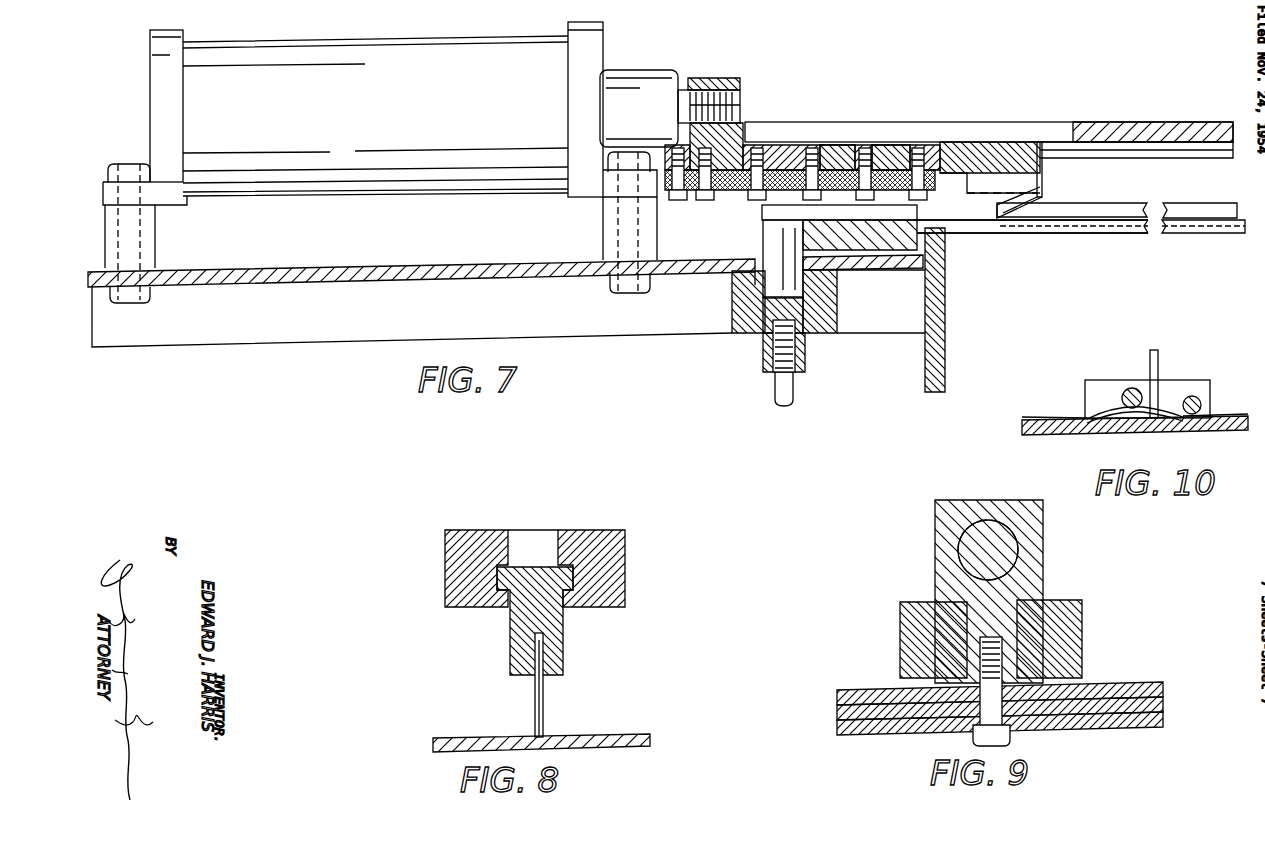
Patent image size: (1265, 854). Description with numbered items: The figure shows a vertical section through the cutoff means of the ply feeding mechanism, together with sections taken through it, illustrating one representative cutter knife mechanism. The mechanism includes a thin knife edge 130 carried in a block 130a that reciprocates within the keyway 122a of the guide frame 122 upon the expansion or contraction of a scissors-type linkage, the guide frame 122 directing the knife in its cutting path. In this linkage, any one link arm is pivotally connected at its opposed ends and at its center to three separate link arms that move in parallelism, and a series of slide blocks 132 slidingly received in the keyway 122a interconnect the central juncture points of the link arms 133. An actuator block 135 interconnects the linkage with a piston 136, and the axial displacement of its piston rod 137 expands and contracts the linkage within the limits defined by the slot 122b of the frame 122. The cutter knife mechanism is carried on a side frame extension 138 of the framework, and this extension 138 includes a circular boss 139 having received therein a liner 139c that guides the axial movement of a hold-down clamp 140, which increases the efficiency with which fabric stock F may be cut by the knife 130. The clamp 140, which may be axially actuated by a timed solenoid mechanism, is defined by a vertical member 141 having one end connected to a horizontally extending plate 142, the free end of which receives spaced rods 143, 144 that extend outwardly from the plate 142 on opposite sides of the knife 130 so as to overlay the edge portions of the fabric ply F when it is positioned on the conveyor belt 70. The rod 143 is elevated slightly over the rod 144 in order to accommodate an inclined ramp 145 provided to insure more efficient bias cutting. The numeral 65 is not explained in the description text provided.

In FIG. 7, the piston 136 is at (512, 48).
In FIG. 7, the piston rod 137 is at (745, 98).
In FIG. 9, the piston rod 137 is at (1000, 547).
In FIG. 7, the frame 65 is at (758, 104).
In FIG. 7, the actuator block 135 is at (745, 125).
In FIG. 9, the actuator block 135 is at (1044, 573).
In FIG. 7, the link arms 133 is at (775, 143).
In FIG. 9, the link arms 133 is at (838, 712).
In FIG. 7, the slide blocks 132 is at (828, 145).
In FIG. 7, the slot 122b is at (1063, 128).
In FIG. 8, the slot 122b is at (518, 530).
In FIG. 8, the keyway 122a is at (575, 578).
In FIG. 9, the guide frame 122 is at (918, 602).
In FIG. 7, the knife edge 130 is at (1018, 148).
In FIG. 10, the knife edge 130 is at (1158, 360).
In FIG. 8, the knife edge 130 is at (546, 705).
In FIG. 7, the block 130a is at (1042, 167).
In FIG. 8, the block 130a is at (553, 630).
In FIG. 7, the side frame extension 138 is at (512, 276).
In FIG. 7, the circular boss 139 is at (738, 310).
In FIG. 7, the liner 139c is at (806, 318).
In FIG. 7, the hold-down clamp 140 is at (770, 246).
In FIG. 7, the vertical member 141 is at (804, 352).
In FIG. 7, the horizontally extending plate 142 is at (823, 230).
In FIG. 10, the horizontally extending plate 142 is at (1208, 395).
In FIG. 7, the rod 143 is at (1228, 196).
In FIG. 10, the rod 143 is at (1130, 389).
In FIG. 10, the rod 144 is at (1191, 396).
In FIG. 7, the inclined ramp 145 is at (1043, 232).
In FIG. 10, the inclined ramp 145 is at (1135, 418).
In FIG. 7, the fabric stock F is at (1218, 244).
In FIG. 10, the fabric stock F is at (1040, 417).
In FIG. 8, the conveyor belt 70 is at (625, 747).